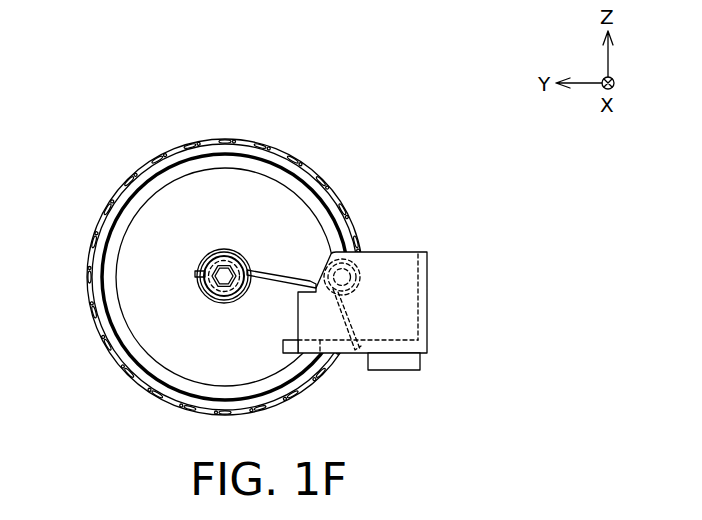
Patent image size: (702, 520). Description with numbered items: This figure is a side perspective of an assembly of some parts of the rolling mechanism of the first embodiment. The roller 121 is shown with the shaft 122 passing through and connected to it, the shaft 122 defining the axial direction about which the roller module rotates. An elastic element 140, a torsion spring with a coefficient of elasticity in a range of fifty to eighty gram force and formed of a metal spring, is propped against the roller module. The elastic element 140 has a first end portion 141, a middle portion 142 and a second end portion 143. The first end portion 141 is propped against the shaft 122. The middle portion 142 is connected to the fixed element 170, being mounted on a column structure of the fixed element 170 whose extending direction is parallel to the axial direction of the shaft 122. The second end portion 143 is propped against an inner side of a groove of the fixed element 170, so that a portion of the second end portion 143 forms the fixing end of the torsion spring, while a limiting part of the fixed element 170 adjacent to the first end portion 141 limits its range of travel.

The roller 121 is at (152, 173).
The shaft 122 is at (207, 297).
The elastic element 140 is at (511, 203).
The first end portion 141 is at (236, 249).
The middle portion 142 is at (358, 276).
The second end portion 143 is at (345, 313).
The fixed element 170 is at (398, 328).